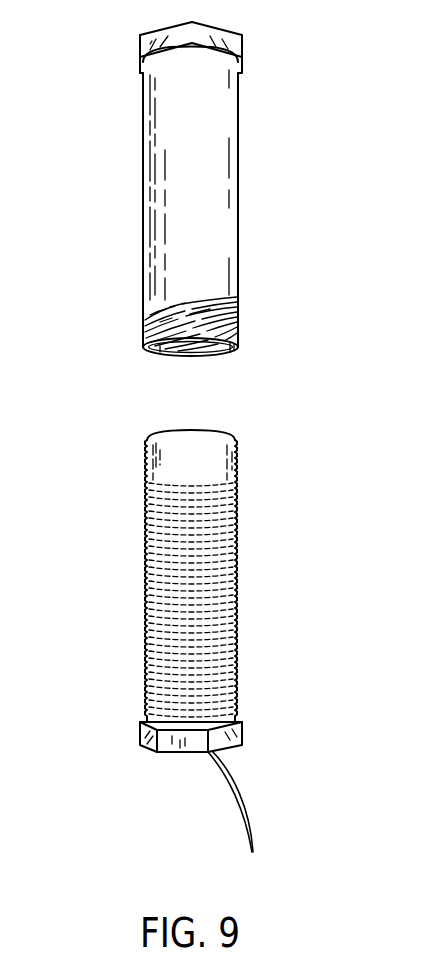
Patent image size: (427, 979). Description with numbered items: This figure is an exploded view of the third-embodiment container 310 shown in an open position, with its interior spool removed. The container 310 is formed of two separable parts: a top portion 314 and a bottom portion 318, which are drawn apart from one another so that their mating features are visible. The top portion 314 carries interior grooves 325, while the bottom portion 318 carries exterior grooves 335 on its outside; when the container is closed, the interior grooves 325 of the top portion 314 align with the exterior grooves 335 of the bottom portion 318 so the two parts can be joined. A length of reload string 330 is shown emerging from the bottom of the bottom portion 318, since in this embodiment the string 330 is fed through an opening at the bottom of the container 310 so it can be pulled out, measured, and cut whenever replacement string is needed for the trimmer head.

The container 310 is at (100, 38).
The top portion 314 is at (238, 141).
The interior grooves 325 is at (238, 320).
The bottom portion 318 is at (236, 465).
The exterior grooves 335 is at (200, 592).
The reload string 330 is at (253, 818).